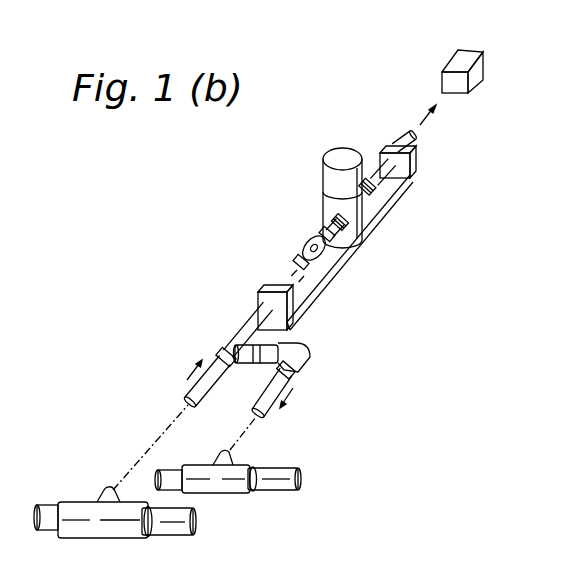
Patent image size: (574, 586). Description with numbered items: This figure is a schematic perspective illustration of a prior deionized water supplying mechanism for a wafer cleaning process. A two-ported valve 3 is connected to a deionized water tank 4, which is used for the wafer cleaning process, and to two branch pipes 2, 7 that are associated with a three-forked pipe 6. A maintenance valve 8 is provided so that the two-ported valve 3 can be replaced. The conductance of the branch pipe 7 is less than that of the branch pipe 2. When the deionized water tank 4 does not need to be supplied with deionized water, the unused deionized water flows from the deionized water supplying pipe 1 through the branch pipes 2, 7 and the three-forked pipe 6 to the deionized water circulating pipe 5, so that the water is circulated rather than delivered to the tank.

The deionized water supplying pipe 1 is at (73, 502).
The branch pipe 2 is at (193, 392).
The two-ported valve 3 is at (323, 205).
The deionized water tank 4 is at (443, 72).
The deionized water circulating pipe 5 is at (278, 493).
The three-forked pipe 6 is at (232, 338).
The branch pipe 7 is at (292, 384).
The maintenance valve 8 is at (327, 262).